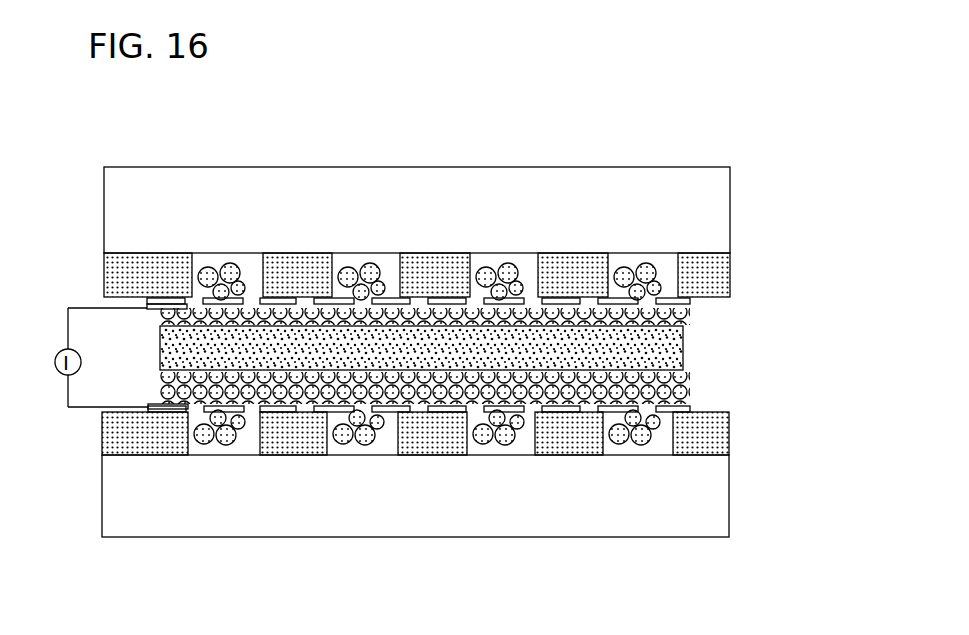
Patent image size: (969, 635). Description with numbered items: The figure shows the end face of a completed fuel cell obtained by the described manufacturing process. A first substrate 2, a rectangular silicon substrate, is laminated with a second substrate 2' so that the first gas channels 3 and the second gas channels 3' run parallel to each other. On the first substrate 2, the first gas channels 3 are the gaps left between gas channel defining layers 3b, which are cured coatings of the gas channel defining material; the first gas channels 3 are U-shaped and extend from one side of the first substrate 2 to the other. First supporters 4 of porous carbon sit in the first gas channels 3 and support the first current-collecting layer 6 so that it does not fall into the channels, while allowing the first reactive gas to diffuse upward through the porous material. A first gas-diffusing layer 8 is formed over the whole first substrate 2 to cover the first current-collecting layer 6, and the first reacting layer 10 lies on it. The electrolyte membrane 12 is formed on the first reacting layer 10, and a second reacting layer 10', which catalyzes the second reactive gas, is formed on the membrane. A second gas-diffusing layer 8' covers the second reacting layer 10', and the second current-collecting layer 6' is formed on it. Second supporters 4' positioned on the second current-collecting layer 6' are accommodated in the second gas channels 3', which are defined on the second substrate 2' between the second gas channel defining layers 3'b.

The first substrate 2 is at (466, 496).
The second substrate 2' is at (463, 178).
The first gas channels 3 is at (512, 503).
The second gas channels 3' is at (514, 188).
The gas channel defining layers 3b is at (445, 440).
The second gas channel defining layers 3'b is at (417, 191).
The first supporters 4 is at (719, 435).
The second supporters 4' is at (722, 238).
The first current-collecting layer 6 is at (489, 402).
The second current-collecting layer 6' is at (487, 279).
The first gas-diffusing layer 8 is at (121, 467).
The second gas-diffusing layer 8' is at (112, 258).
The first reacting layer 10 is at (358, 407).
The second reacting layer 10' is at (352, 290).
The electrolyte membrane 12 is at (683, 343).